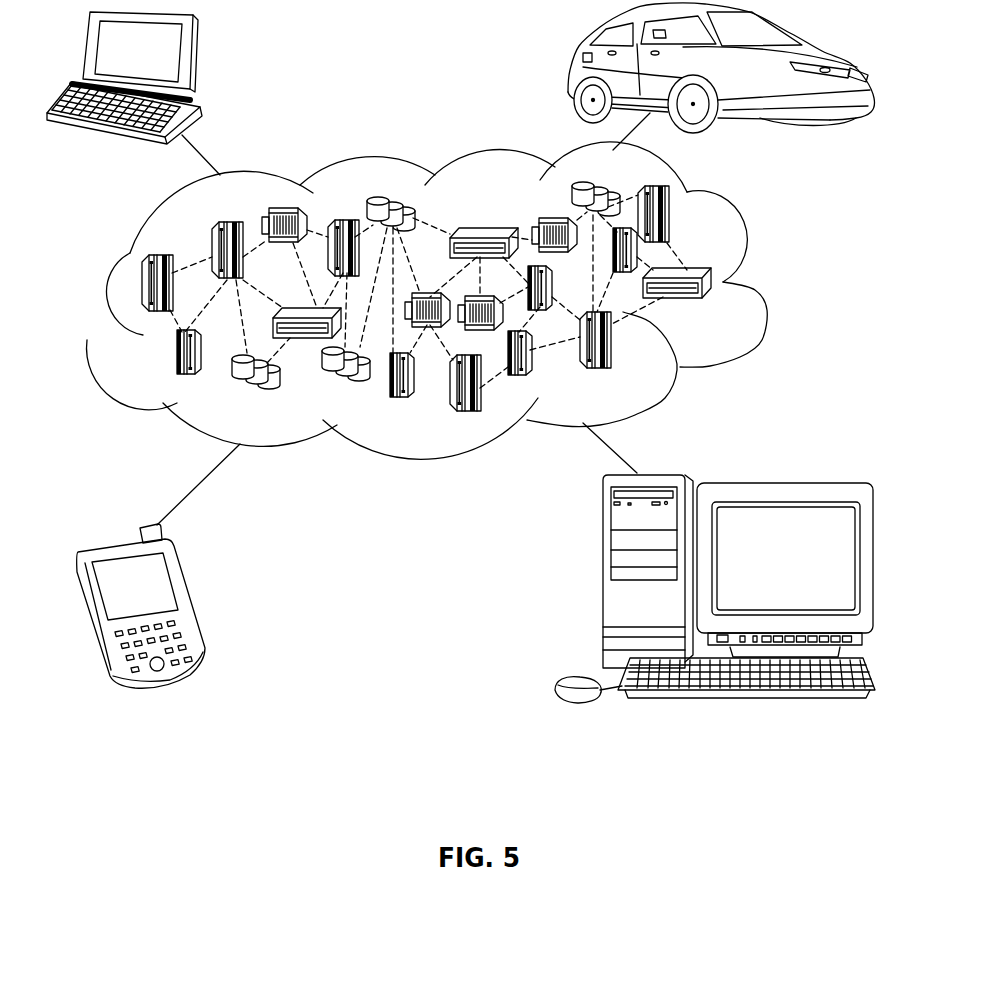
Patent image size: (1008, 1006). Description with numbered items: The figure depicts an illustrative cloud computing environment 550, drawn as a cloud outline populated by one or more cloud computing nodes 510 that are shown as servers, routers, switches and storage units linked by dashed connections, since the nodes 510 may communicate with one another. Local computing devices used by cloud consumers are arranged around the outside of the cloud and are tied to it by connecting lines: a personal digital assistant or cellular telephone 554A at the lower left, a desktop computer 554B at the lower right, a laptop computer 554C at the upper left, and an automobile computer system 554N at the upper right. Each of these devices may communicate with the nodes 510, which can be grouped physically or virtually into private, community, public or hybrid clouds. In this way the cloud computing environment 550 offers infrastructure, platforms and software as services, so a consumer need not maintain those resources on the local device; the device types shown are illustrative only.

The cloud computing nodes 510 is at (727, 304).
The cloud computing environment 550 is at (750, 243).
The personal digital assistant (PDA) or cellular telephone 554A is at (188, 597).
The desktop computer 554B is at (602, 578).
The laptop computer 554C is at (197, 55).
The automobile computer system 554N is at (577, 58).